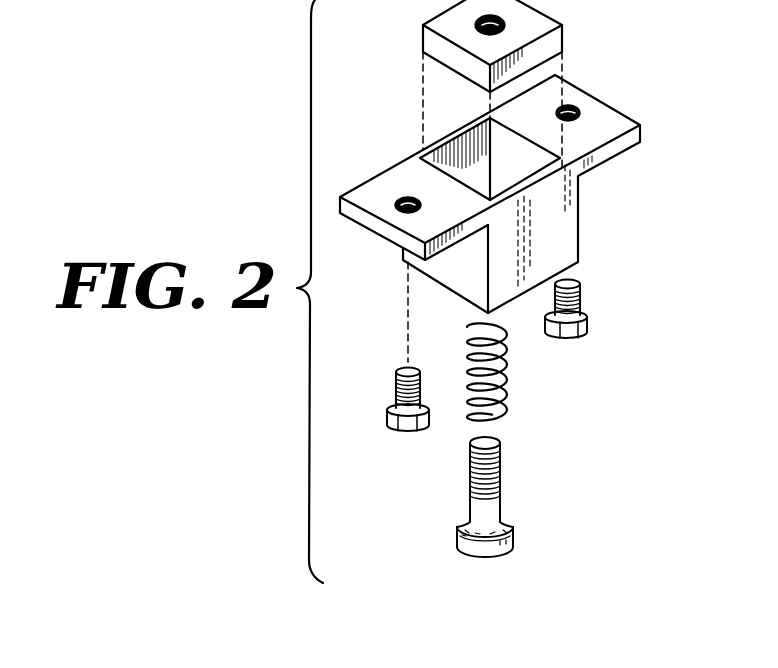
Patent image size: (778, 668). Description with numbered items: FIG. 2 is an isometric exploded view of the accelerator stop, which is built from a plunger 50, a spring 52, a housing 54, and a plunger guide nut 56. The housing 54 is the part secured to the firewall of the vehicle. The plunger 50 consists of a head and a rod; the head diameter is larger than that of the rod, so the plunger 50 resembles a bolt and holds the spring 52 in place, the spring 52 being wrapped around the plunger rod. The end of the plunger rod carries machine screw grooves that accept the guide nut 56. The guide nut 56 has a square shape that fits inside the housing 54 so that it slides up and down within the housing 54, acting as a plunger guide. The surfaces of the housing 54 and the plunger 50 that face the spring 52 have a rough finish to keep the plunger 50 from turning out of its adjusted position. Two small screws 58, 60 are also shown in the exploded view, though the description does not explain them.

The plunger 50 is at (497, 510).
The spring 52 is at (507, 378).
The housing 54 is at (550, 233).
The plunger guide nut 56 is at (550, 44).
The screw 58 is at (388, 417).
The screw 60 is at (583, 327).